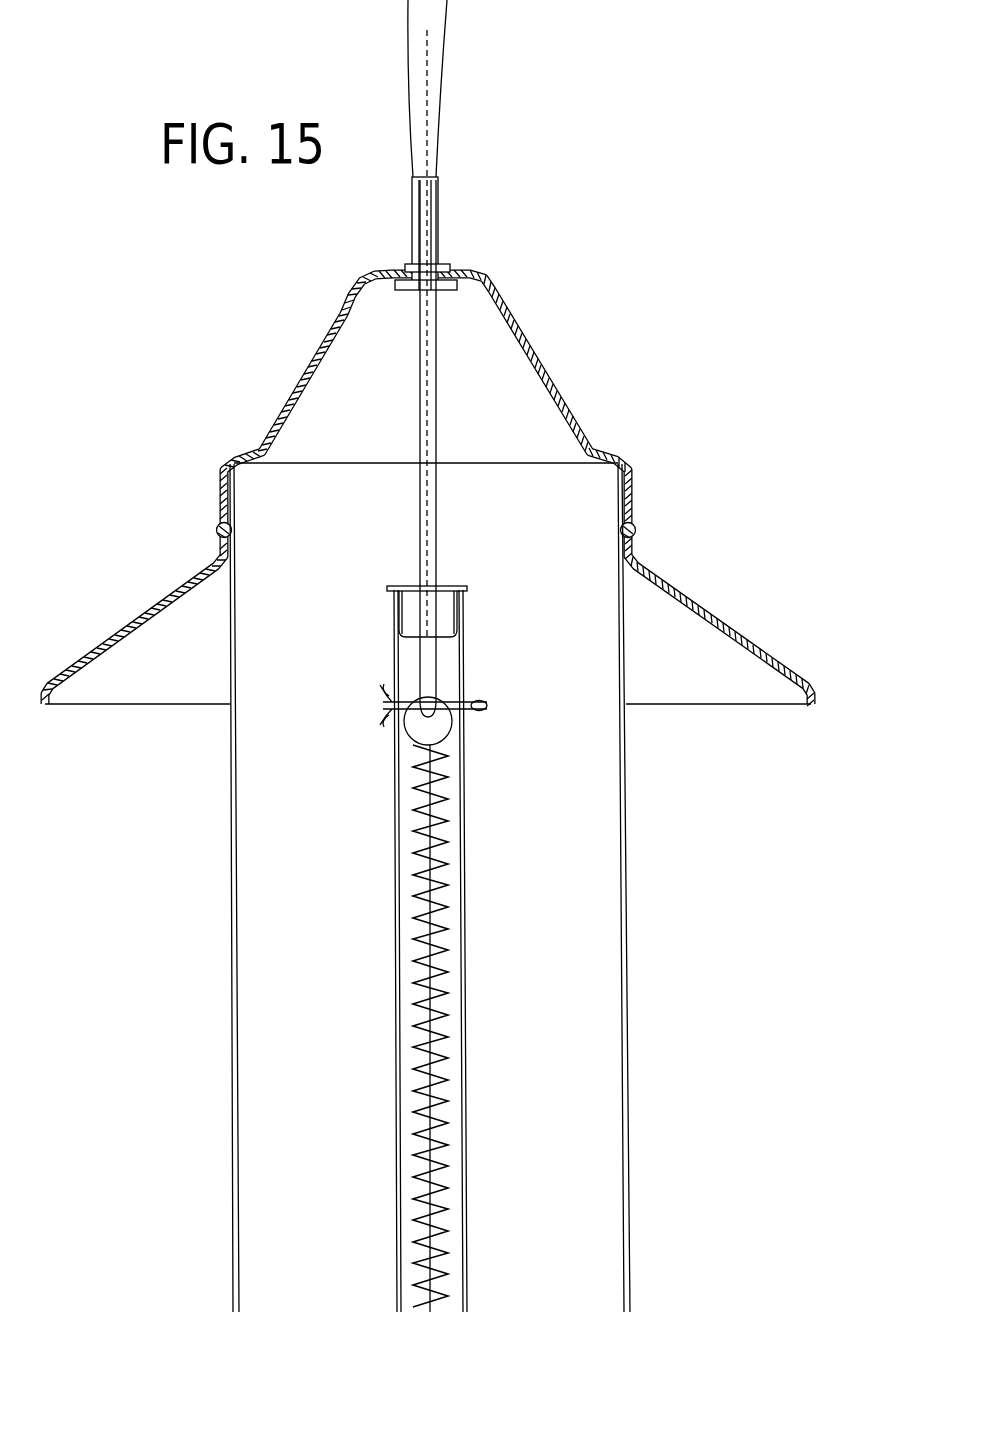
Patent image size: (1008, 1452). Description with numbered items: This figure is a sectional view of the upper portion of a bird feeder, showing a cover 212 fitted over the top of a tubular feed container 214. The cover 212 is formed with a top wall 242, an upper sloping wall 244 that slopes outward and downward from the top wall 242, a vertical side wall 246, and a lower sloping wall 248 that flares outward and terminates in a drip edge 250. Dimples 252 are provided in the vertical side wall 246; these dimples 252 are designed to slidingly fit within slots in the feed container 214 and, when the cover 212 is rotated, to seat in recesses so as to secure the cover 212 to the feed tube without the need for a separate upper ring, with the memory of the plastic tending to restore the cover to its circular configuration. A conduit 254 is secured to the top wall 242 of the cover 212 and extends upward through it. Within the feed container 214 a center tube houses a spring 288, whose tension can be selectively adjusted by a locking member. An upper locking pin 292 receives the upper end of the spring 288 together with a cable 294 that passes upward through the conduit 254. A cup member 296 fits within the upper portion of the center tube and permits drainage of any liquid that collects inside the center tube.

The cover 212 is at (672, 340).
The feed container 214 is at (688, 980).
The top wall 242 is at (462, 272).
The upper sloping wall 244 is at (555, 378).
The vertical side wall 246 is at (632, 470).
The lower sloping wall 248 is at (693, 604).
The drip edge 250 is at (815, 692).
The dimples 252 is at (636, 528).
The conduit 254 is at (412, 212).
The spring 288 is at (452, 943).
The upper locking pin 292 is at (486, 706).
The cable 294 is at (440, 500).
The cup member 296 is at (402, 608).